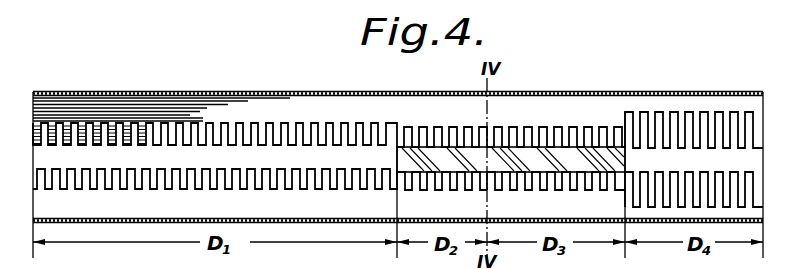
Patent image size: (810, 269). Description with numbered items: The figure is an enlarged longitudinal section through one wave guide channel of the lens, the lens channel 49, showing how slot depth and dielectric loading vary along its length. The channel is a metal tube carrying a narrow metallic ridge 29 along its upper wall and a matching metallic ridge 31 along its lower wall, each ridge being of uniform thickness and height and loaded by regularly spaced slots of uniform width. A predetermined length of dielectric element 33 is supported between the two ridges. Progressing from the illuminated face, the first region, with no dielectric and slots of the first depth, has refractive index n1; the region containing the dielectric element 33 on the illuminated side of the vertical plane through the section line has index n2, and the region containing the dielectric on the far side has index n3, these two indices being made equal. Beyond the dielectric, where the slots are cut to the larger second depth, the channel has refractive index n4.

The lens channel 49 is at (37, 86).
The metallic ridge 29 is at (123, 108).
The dielectric element 33 is at (397, 160).
The metallic ridge 31 is at (108, 206).
The refractive index of first region n1 is at (158, 207).
The refractive index of second region n2 is at (413, 208).
The refractive index of third region n3 is at (518, 208).
The refractive index of fourth region n4 is at (657, 210).